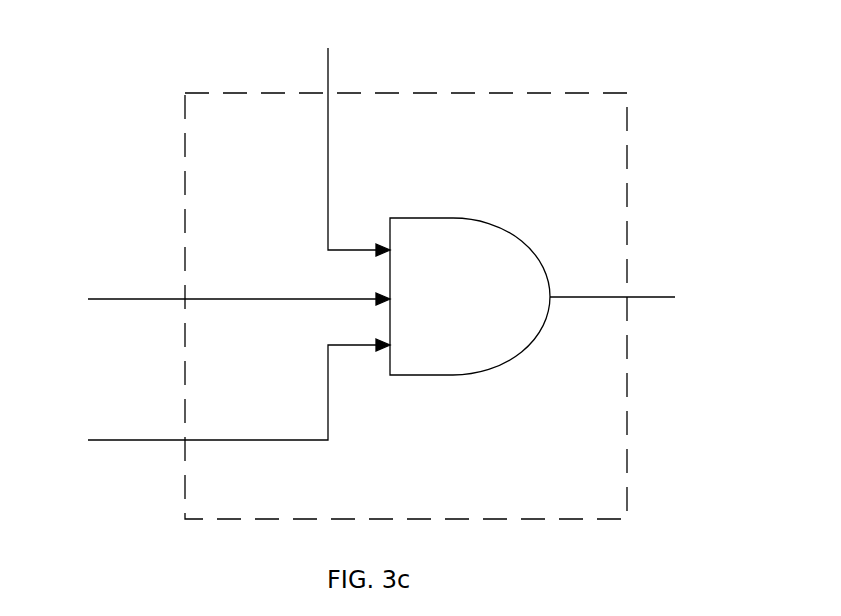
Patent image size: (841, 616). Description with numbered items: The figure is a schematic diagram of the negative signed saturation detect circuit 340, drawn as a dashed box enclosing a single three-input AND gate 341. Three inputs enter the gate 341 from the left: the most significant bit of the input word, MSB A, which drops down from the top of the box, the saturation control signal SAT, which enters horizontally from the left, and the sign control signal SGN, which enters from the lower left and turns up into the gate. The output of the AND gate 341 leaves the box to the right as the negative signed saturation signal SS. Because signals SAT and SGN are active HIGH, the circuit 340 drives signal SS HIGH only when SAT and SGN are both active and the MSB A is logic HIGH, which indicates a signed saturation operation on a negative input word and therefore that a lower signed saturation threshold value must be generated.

The negative signed saturation detect circuit 340 is at (214, 92).
The three-input AND gate 341 is at (470, 296).
The MSB A[n-1] of input word A is at (341, 139).
The saturation control signal SAT is at (207, 300).
The sign control signal SGN is at (207, 397).
The negative signed saturation signal SS is at (632, 298).